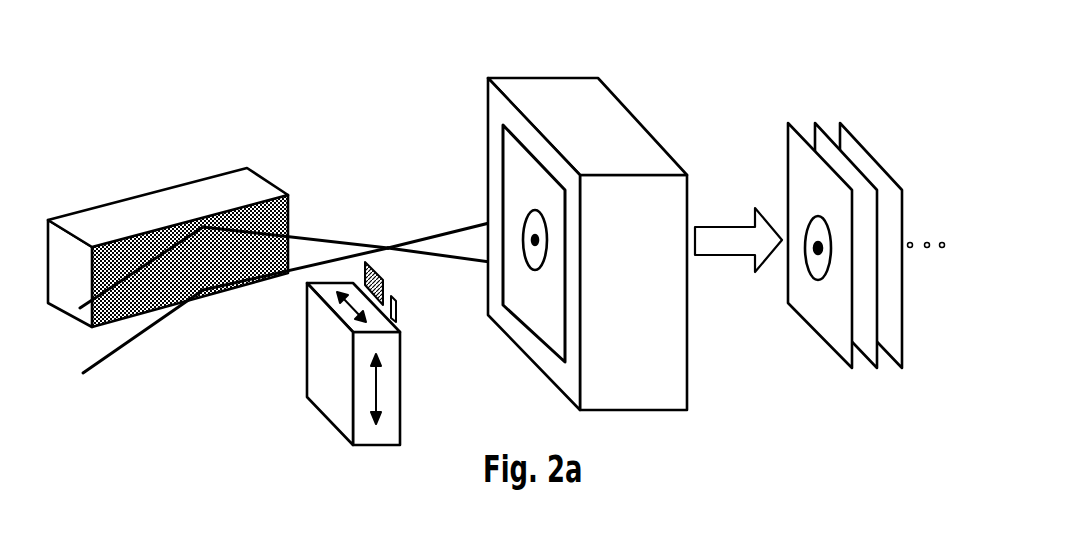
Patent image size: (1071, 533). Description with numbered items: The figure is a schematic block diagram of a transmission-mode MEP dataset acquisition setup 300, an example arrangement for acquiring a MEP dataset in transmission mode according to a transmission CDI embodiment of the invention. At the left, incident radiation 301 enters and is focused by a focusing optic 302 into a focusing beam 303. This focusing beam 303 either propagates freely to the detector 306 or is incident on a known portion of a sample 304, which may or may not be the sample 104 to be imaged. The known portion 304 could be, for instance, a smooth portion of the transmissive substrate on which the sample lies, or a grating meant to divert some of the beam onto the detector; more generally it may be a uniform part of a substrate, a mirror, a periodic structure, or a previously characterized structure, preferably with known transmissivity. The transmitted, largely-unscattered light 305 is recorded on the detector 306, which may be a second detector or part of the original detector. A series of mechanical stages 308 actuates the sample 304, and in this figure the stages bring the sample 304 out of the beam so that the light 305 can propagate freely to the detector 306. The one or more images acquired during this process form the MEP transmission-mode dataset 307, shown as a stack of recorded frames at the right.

The transmission-mode MEP dataset acquisition setup 300 is at (487, 244).
The incident radiation 301 is at (116, 300).
The focusing optic 302 is at (168, 239).
The focusing beam 303 is at (295, 244).
The sample to be imaged 104 is at (401, 281).
The known portion of a sample 304 is at (426, 323).
The transmitted, largely-unscattered light 305 is at (461, 228).
The detector 306 is at (587, 244).
The MEP transmission-mode dataset 307 is at (866, 268).
The mechanical stages 308 is at (354, 385).